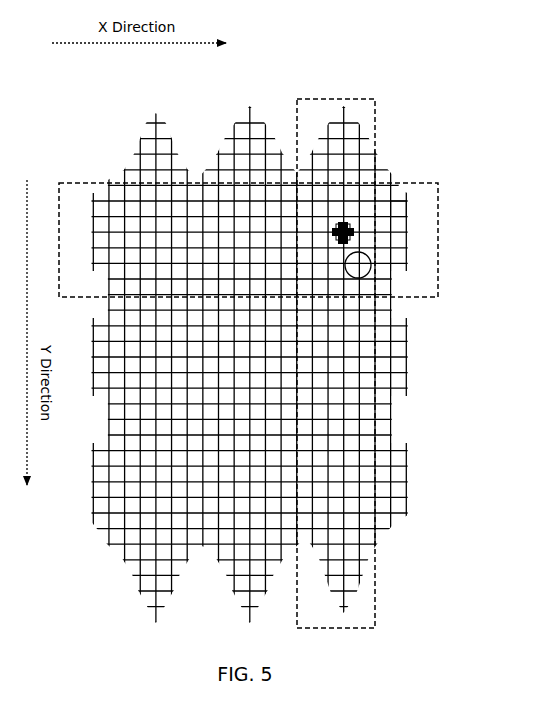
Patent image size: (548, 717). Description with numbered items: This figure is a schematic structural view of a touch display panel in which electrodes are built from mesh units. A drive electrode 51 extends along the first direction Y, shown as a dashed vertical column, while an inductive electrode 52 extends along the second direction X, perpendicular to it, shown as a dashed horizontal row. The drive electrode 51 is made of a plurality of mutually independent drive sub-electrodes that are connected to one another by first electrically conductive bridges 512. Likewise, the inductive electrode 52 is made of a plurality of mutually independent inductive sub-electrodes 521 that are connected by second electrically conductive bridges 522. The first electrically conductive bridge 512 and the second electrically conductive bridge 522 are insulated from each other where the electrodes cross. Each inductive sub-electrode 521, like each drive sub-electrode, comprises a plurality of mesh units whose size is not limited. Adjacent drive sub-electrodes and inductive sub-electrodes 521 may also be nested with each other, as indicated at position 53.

The drive electrode 51 is at (343, 96).
The inductive electrode 52 is at (76, 181).
The position 53 is at (374, 279).
The first electrically conductive bridge 512 is at (347, 222).
The inductive sub-electrode 521 is at (404, 199).
The second electrically conductive bridge 522 is at (336, 227).